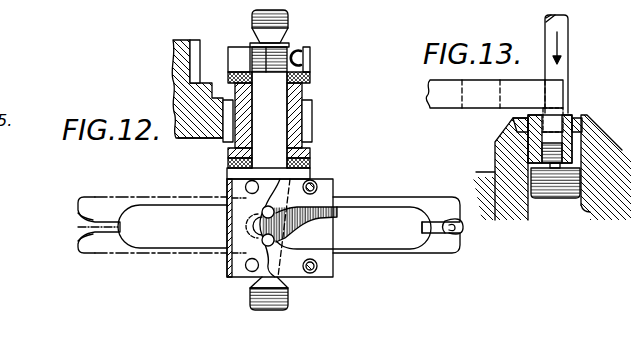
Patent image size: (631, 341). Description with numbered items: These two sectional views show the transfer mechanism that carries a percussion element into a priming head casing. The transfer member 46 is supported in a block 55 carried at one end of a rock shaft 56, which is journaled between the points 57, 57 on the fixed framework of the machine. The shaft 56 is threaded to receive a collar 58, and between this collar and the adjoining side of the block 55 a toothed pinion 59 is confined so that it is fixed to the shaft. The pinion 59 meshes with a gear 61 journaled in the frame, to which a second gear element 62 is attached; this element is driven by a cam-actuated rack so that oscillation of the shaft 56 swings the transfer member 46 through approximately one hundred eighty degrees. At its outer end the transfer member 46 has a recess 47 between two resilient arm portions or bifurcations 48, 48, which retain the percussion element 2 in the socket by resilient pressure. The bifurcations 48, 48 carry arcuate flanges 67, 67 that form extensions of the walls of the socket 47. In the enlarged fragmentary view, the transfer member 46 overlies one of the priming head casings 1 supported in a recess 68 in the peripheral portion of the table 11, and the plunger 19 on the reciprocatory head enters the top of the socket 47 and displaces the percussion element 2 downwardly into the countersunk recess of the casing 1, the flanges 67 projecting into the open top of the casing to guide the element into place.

In FIG. 13, the casing 1 is at (550, 190).
In FIG. 13, the percussion element 2 is at (567, 138).
In FIG. 13, the table 11 is at (490, 170).
In FIG. 13, the plunger 19 is at (567, 40).
In FIG. 12, the transfer member 46 is at (192, 250).
In FIG. 13, the transfer member 46 is at (440, 88).
In FIG. 12, the recess 47 is at (460, 228).
In FIG. 13, the recess 47 is at (517, 127).
In FIG. 12, the resilient arm portions 48 is at (421, 198).
In FIG. 12, the block 55 is at (322, 180).
In FIG. 12, the rock shaft 56 is at (275, 102).
In FIG. 12, the points 57 is at (288, 20).
In FIG. 12, the collar 58 is at (303, 51).
In FIG. 12, the toothed pinion 59 is at (312, 122).
In FIG. 12, the gear 61 is at (207, 123).
In FIG. 12, the second gear element 62 is at (176, 42).
In FIG. 13, the arcuate flanges 67 is at (550, 122).
In FIG. 13, the recesses 68 is at (585, 208).